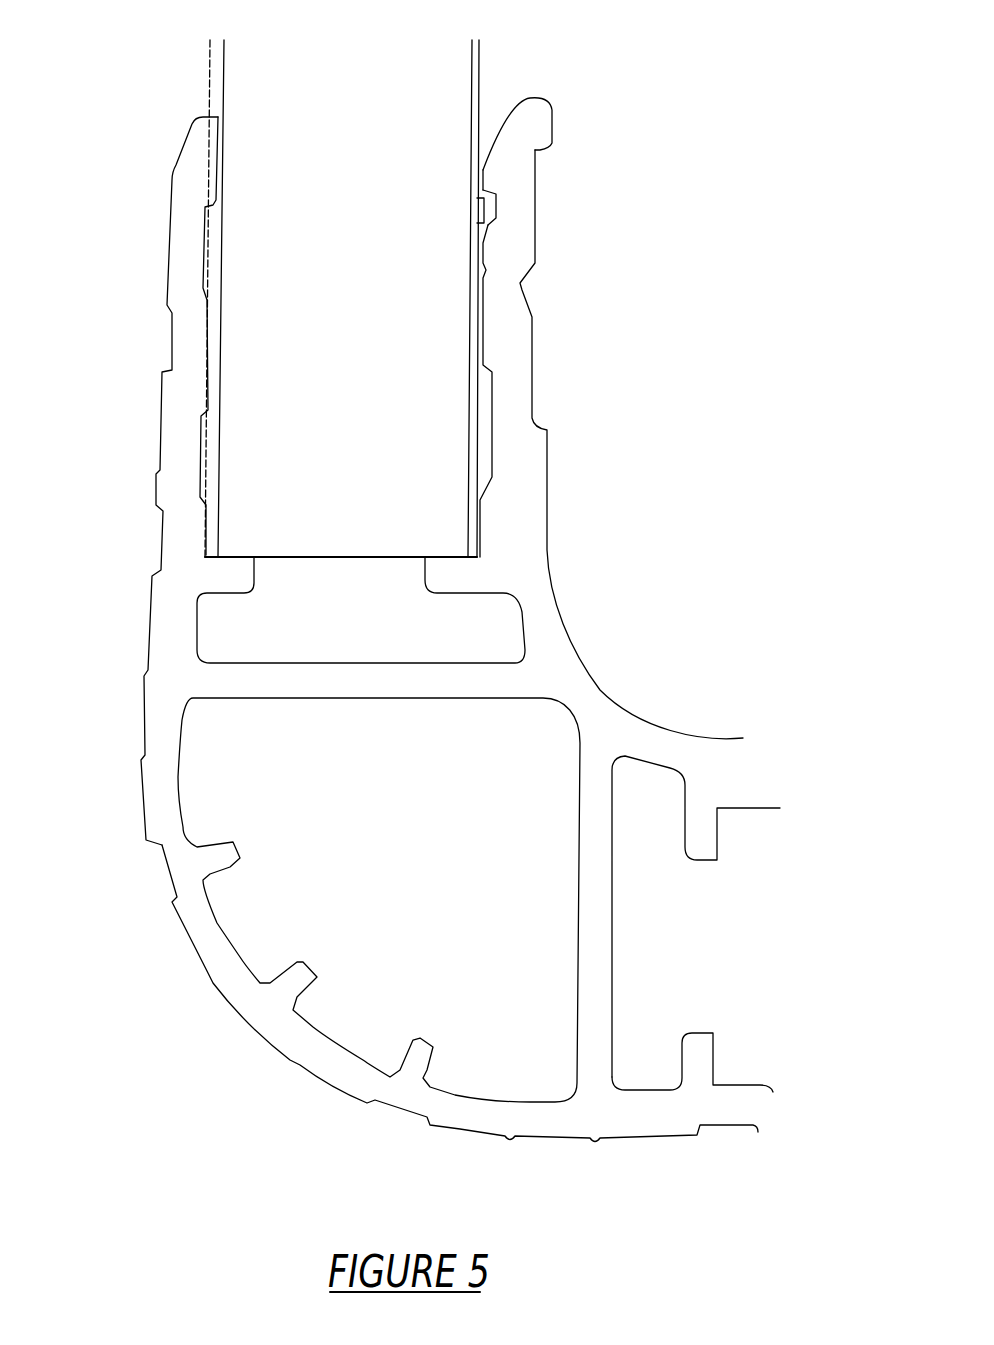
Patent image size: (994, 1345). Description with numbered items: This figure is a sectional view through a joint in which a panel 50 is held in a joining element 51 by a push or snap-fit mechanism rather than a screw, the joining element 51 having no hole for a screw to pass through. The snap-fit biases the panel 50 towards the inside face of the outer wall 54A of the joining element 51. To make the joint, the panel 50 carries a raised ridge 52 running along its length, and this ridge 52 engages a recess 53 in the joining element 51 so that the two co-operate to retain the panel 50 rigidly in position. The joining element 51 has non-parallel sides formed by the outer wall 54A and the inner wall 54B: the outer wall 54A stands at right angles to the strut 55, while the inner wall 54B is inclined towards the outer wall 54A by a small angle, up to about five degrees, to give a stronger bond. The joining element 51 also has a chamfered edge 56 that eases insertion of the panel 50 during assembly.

The panel 50 is at (358, 367).
The joining element 51 is at (617, 550).
The raised ridge 52 is at (484, 215).
The recess 53 is at (497, 203).
The outer wall 54A is at (167, 405).
The inner wall 54B is at (538, 463).
The strut 55 is at (257, 678).
The chamfered edge 56 is at (518, 107).